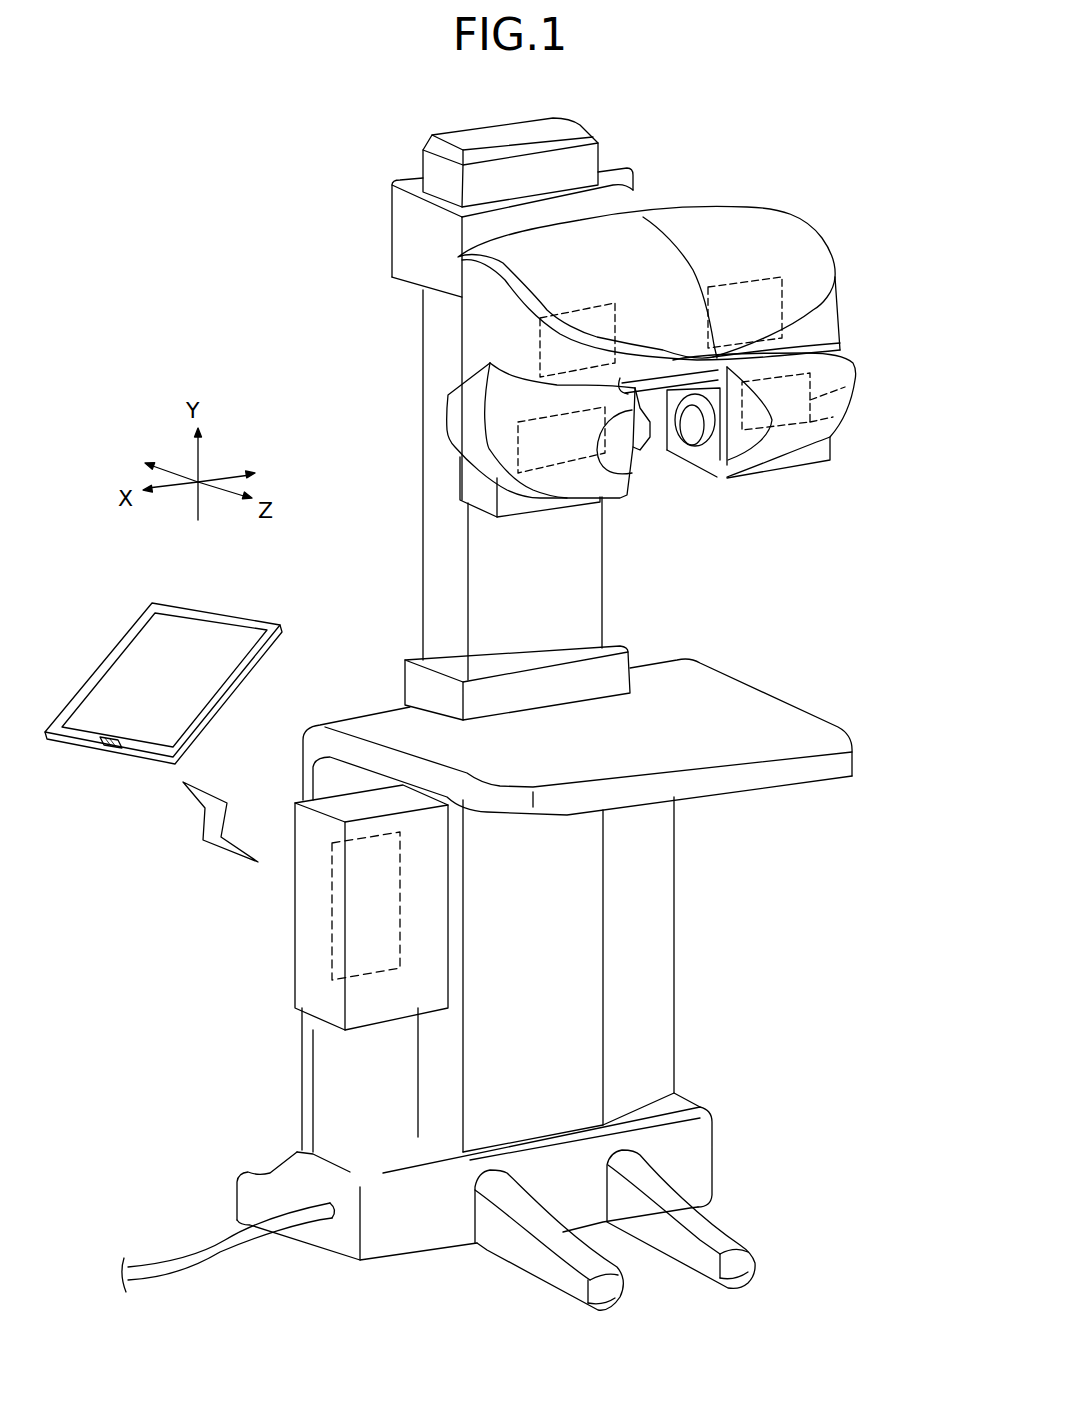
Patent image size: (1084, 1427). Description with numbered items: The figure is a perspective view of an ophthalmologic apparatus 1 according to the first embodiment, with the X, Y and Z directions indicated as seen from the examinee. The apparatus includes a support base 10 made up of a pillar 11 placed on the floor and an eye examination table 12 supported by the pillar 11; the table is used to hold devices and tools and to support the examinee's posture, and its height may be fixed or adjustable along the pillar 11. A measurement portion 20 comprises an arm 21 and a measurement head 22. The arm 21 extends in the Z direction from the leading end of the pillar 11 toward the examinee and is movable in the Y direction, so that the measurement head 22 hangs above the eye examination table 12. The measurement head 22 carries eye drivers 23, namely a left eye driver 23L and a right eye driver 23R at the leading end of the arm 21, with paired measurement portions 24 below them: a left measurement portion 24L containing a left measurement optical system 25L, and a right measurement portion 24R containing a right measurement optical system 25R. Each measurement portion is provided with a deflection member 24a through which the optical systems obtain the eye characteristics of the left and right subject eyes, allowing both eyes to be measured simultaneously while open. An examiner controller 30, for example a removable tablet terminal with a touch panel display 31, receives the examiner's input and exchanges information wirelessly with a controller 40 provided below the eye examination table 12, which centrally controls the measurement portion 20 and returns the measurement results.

The ophthalmologic apparatus 1 is at (285, 318).
The support base 10 is at (684, 945).
The pillar 11 is at (445, 578).
The eye examination table 12 is at (815, 702).
The measurement portion 20 is at (455, 217).
The arm 21 is at (543, 260).
The measurement head 22 is at (783, 245).
The eye driver 23 is at (581, 234).
The left eye driver 23L is at (565, 298).
The right eye driver 23R is at (733, 283).
The measurement portion 24 is at (624, 435).
The left measurement portion 24L is at (481, 468).
The right measurement portion 24R is at (840, 423).
The deflection member 24a is at (655, 445).
The left measurement optical system 25L is at (518, 422).
The right measurement optical system 25R is at (810, 376).
The examiner controller 30 is at (108, 757).
The display 31 is at (173, 690).
The controller 40 is at (332, 875).